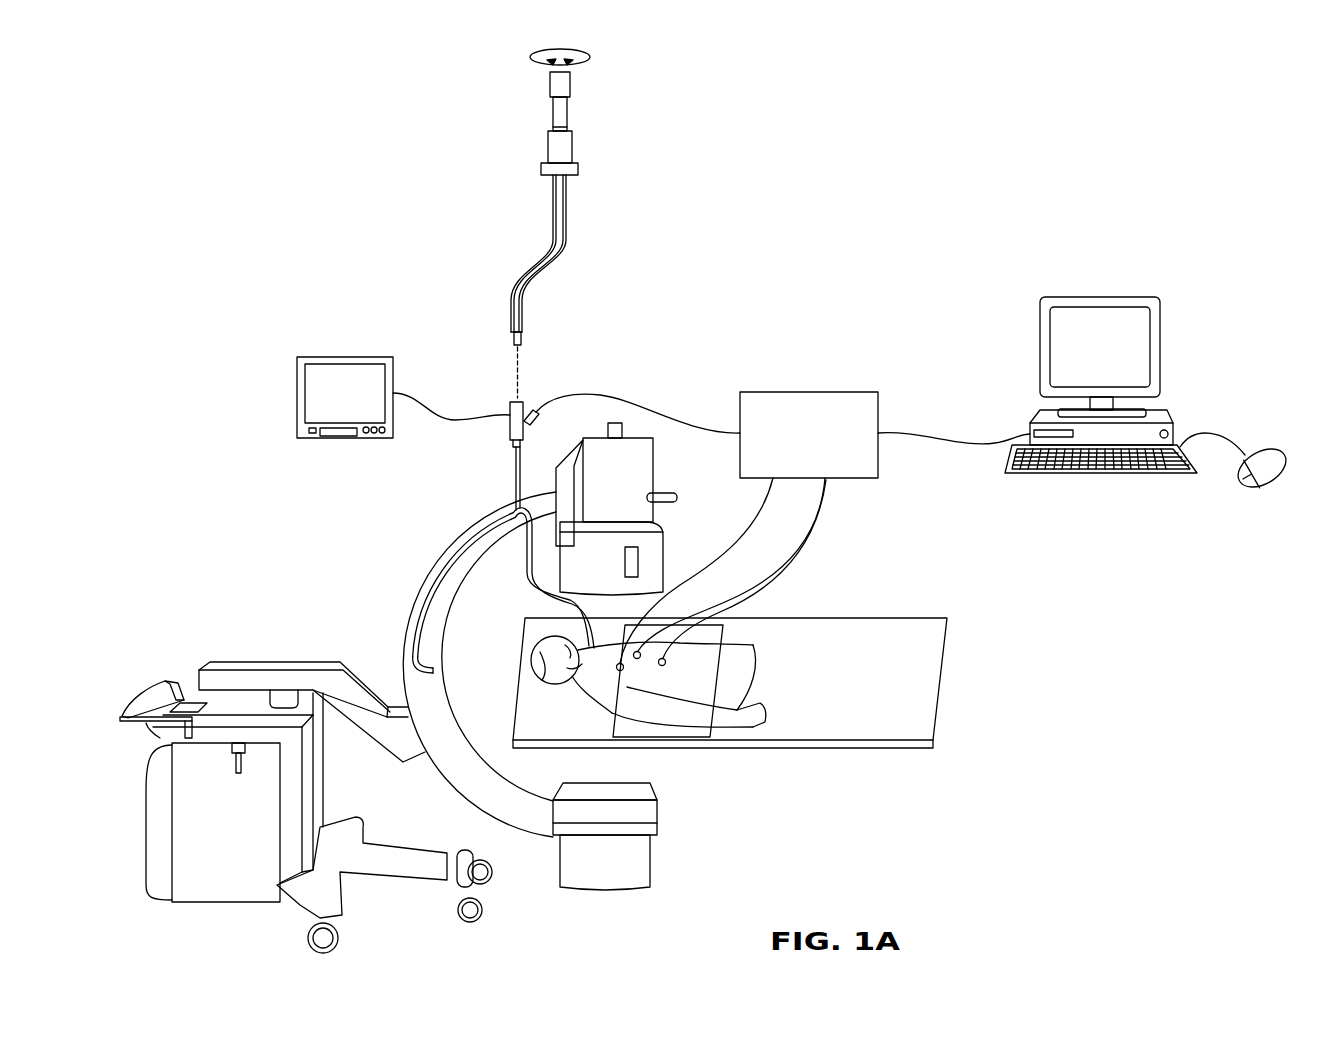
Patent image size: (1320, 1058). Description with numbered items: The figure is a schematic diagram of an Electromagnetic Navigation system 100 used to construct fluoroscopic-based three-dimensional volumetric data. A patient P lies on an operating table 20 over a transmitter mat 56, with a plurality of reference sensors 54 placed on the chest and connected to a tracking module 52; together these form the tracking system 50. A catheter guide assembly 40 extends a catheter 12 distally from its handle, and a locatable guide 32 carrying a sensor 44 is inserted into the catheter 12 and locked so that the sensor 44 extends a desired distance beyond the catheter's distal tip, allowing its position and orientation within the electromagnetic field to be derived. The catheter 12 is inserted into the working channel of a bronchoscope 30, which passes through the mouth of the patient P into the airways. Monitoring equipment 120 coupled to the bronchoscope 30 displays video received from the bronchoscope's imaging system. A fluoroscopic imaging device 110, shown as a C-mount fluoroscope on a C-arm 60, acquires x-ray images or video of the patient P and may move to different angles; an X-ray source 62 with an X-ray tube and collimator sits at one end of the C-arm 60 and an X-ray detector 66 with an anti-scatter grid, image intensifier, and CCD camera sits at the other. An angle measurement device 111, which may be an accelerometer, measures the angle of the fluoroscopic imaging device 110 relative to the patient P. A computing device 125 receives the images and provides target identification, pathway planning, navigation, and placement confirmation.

The Electromagnetic Navigation (EMN) system 100 is at (1086, 196).
The locatable guide 32 is at (585, 118).
The catheter guide assembly 40 is at (548, 147).
The catheter 12 is at (567, 243).
The sensor 44 is at (522, 343).
The bronchoscope 30 is at (512, 470).
The monitoring equipment 120 is at (297, 397).
The angle measurement device 111 is at (615, 423).
The X-ray detector 66 is at (627, 492).
The tracking system 50 is at (866, 392).
The tracking module 52 is at (824, 448).
The computing device 125 is at (1164, 346).
The fluoroscopic imaging device 110 is at (206, 623).
The C-arm 60 is at (470, 770).
The X-ray source 62 is at (617, 870).
The operating table 20 is at (563, 745).
The transmitter mat 56 is at (650, 738).
The reference sensors 54 is at (722, 589).
The patient P is at (530, 655).